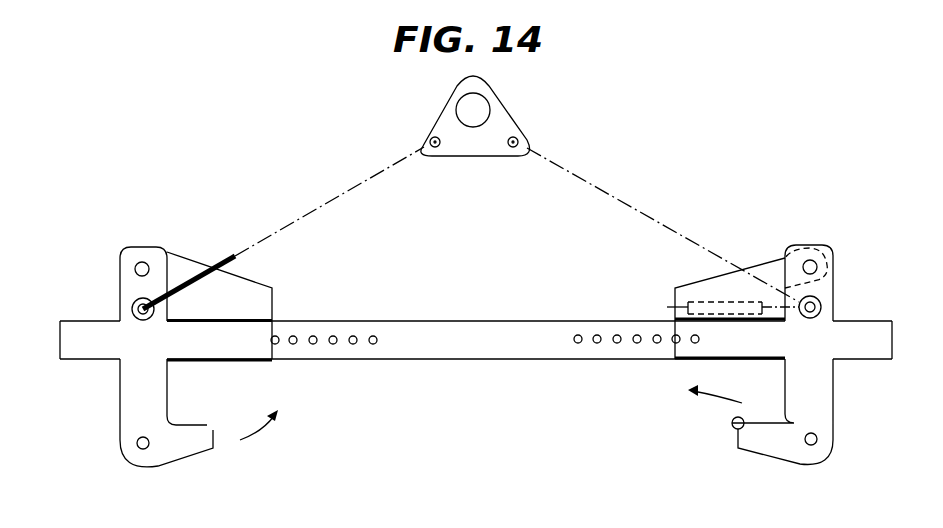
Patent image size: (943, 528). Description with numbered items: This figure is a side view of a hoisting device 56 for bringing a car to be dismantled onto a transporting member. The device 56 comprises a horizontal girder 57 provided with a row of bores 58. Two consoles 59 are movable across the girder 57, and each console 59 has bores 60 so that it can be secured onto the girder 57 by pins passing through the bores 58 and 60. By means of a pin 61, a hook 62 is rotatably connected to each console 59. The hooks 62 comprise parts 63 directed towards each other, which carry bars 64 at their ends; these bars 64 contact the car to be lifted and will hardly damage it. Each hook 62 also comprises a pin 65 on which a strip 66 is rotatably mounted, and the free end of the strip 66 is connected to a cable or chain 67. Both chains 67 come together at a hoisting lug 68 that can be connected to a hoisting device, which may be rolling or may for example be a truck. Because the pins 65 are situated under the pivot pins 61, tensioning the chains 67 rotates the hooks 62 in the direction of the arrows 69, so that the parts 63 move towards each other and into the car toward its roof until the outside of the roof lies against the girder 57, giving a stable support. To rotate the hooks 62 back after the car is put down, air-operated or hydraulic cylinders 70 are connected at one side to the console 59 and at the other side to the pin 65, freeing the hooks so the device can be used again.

The hoisting device 56 is at (443, 367).
The girder 57 is at (495, 320).
The bores 58 is at (578, 335).
The console 59 is at (756, 246).
The bores 60 is at (695, 344).
The pin 61 is at (817, 264).
The hook 62 is at (840, 292).
The parts 63 is at (770, 442).
The bars 64 is at (733, 428).
The pin 65 is at (137, 299).
The strip 66 is at (223, 257).
The cable or chain 67 is at (672, 213).
The hoisting lug 68 is at (500, 118).
The arrows 69 is at (492, 405).
The air-operated or hydraulic cylinder 70 is at (697, 300).